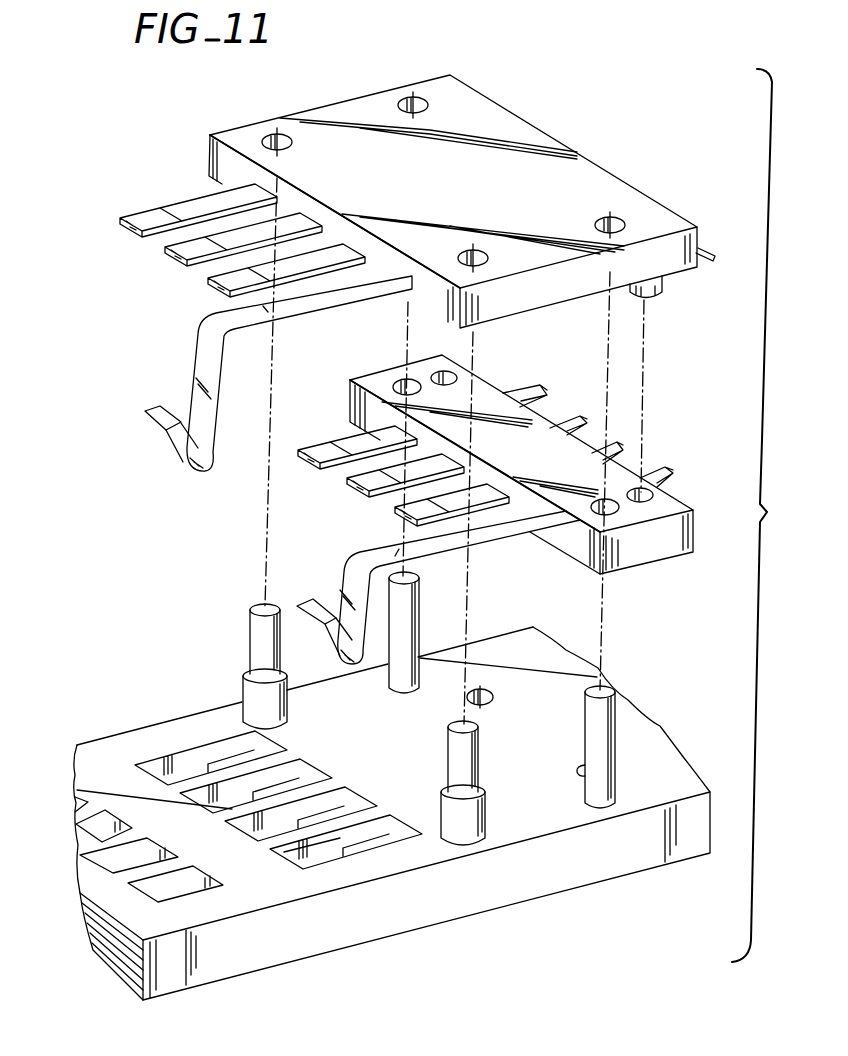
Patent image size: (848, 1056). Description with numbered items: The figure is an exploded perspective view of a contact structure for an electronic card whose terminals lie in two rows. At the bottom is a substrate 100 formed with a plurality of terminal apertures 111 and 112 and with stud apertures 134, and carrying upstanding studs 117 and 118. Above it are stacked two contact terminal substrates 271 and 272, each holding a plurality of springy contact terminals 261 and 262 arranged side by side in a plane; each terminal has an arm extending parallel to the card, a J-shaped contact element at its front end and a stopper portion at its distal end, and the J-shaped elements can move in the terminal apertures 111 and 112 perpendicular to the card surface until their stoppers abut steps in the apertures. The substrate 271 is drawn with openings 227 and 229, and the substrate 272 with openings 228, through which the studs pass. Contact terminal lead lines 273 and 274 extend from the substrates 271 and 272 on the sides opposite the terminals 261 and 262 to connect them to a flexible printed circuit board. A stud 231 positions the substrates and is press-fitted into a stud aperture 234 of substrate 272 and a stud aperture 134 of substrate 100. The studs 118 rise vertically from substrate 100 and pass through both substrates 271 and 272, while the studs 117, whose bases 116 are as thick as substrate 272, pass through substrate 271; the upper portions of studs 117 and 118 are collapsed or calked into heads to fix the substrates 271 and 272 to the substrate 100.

The substrate 100 is at (447, 904).
The terminal aperture 111 is at (200, 878).
The terminal aperture 112 is at (322, 852).
The base of stud 116 is at (249, 694).
The stud 117 is at (252, 632).
The stud 118 is at (420, 630).
The stud aperture 134 is at (494, 698).
The hole 227 is at (275, 134).
The hole 228 is at (405, 384).
The hole 229 is at (412, 102).
The stud 231 is at (655, 298).
The stud aperture 234 is at (448, 378).
The contact terminal 261 is at (207, 317).
The contact terminal 262 is at (352, 555).
The contact terminal substrate 271 is at (506, 108).
The contact terminal substrate 272 is at (538, 422).
The contact terminal lead line 273 is at (713, 254).
The contact terminal lead line 274 is at (666, 470).